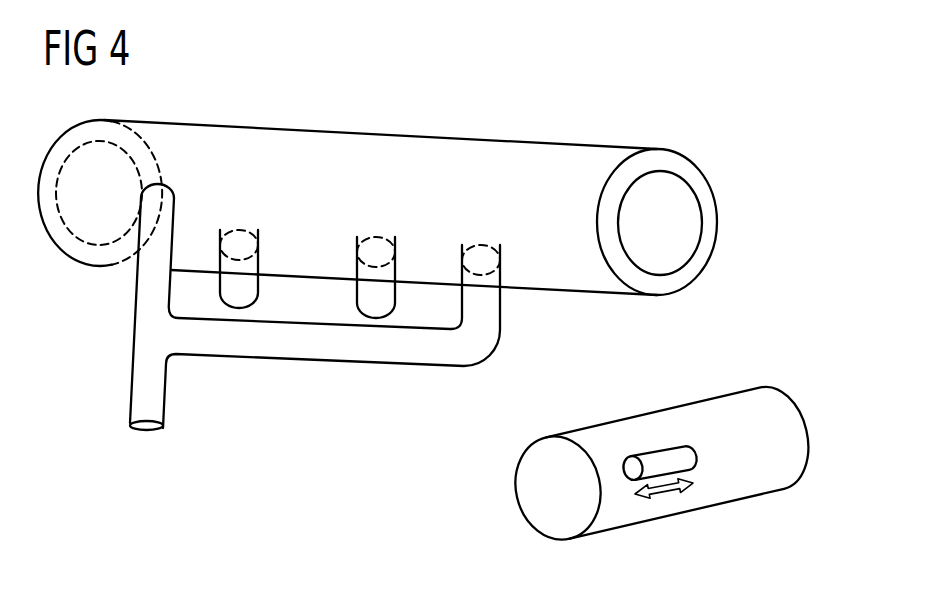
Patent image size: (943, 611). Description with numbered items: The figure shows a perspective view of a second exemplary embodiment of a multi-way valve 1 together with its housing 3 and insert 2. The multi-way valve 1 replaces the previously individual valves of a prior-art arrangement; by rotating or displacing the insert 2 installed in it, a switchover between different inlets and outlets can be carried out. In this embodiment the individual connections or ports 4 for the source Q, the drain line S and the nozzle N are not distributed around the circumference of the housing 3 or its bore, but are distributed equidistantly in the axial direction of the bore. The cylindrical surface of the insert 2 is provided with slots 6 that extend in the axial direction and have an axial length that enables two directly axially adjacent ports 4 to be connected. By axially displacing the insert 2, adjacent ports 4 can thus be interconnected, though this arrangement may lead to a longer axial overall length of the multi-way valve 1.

The multi-way valve 1 is at (707, 198).
The insert 2 is at (522, 502).
The housing 3 is at (702, 233).
The ports 4 is at (168, 200).
The slots 6 is at (658, 460).
The nozzle N is at (237, 308).
The drain line S is at (370, 318).
The source Q is at (145, 428).